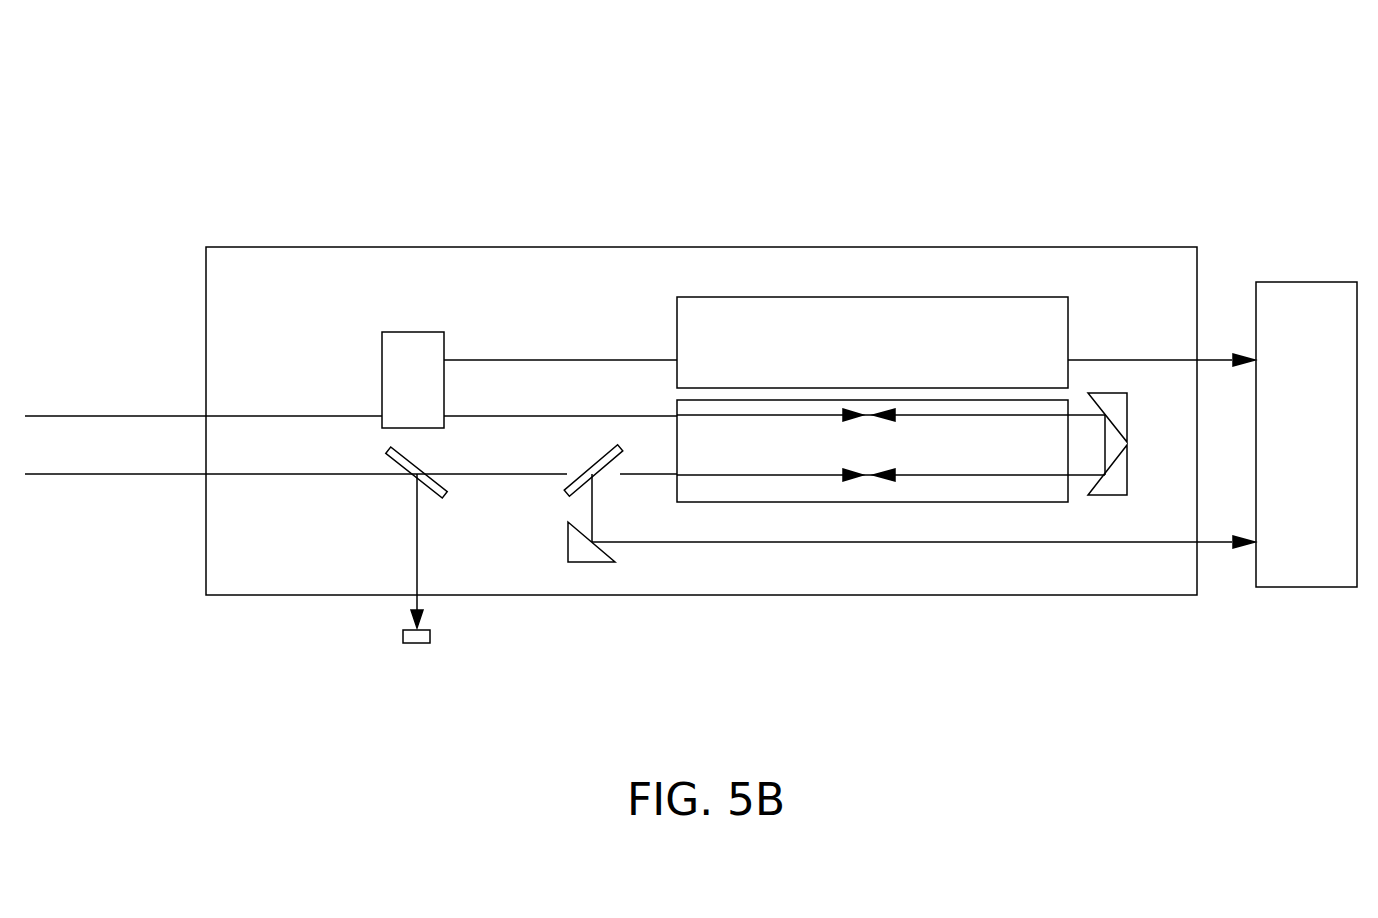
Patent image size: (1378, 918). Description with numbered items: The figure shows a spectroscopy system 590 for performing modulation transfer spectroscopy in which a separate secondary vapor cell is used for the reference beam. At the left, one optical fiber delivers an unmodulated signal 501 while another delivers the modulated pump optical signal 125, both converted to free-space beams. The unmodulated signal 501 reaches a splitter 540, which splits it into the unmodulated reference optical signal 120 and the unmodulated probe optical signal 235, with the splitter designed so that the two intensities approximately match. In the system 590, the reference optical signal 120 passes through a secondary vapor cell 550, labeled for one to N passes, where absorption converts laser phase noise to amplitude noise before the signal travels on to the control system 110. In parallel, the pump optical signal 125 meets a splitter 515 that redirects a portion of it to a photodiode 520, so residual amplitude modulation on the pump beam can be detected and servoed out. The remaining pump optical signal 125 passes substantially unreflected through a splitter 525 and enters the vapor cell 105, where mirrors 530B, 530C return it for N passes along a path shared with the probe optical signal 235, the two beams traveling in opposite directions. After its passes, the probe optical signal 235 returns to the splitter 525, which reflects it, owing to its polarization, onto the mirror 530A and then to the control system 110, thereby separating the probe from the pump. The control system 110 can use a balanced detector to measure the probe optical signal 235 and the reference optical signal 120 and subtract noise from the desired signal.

The spectroscopy system 590 is at (213, 157).
The unmodulated signal 501 is at (117, 416).
The modulated pump optical signal 125 is at (117, 474).
The unmodulated reference optical signal 120 is at (495, 360).
The unmodulated probe optical signal 235 is at (620, 416).
The splitter 540 is at (410, 332).
The splitter 515 is at (445, 493).
The photodiode 520 is at (415, 643).
The splitter 525 is at (597, 478).
The mirror 530A is at (590, 562).
The secondary vapor cell 550 is at (990, 297).
The vapor cell 105 is at (995, 503).
The mirror 530C is at (1100, 393).
The mirror 530B is at (1105, 497).
The control system 110 is at (1286, 343).